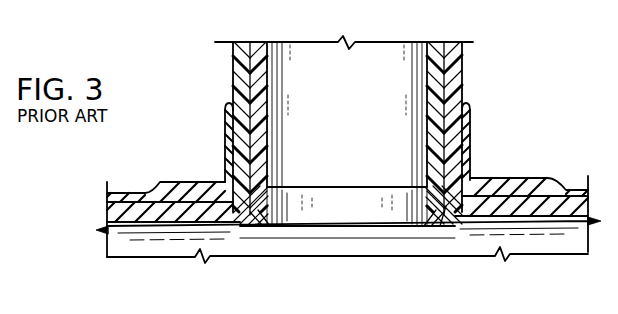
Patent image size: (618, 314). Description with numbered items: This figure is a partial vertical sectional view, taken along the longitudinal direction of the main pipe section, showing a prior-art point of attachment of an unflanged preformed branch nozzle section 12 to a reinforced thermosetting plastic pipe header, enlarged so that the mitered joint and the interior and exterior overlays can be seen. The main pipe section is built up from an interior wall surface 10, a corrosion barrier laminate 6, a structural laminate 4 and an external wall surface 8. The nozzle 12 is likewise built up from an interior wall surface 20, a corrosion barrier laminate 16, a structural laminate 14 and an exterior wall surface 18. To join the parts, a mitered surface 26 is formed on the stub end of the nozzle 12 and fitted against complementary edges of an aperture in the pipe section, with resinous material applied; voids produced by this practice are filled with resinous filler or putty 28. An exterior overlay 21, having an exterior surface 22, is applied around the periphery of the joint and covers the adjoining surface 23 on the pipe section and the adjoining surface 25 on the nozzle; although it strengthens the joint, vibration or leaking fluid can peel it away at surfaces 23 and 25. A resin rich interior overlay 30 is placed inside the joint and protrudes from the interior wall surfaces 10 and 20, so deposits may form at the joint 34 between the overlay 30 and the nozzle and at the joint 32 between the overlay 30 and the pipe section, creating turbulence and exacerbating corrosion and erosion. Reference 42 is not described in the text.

The structural laminate 4 is at (110, 198).
The corrosion barrier laminate 6 is at (112, 213).
The external wall surface 8 is at (126, 193).
The interior wall surface 10 is at (118, 226).
The preformed branch nozzle section 12 is at (470, 50).
The structural laminate 14 is at (464, 63).
The corrosion barrier laminate 16 is at (455, 70).
The exterior wall surface 18 is at (447, 82).
The interior wall surface 20 is at (405, 88).
The exterior overlay 21 is at (467, 126).
The exterior surface 22 is at (512, 178).
The adjoining surface 23 is at (526, 178).
The adjoining surface 25 is at (466, 100).
The mitered surface 26 is at (441, 228).
The resinous filler or putty 28 is at (274, 228).
The interior overlay 30 is at (263, 227).
The joint 32 is at (242, 230).
The joint 34 is at (417, 182).
The base 42 is at (294, 310).